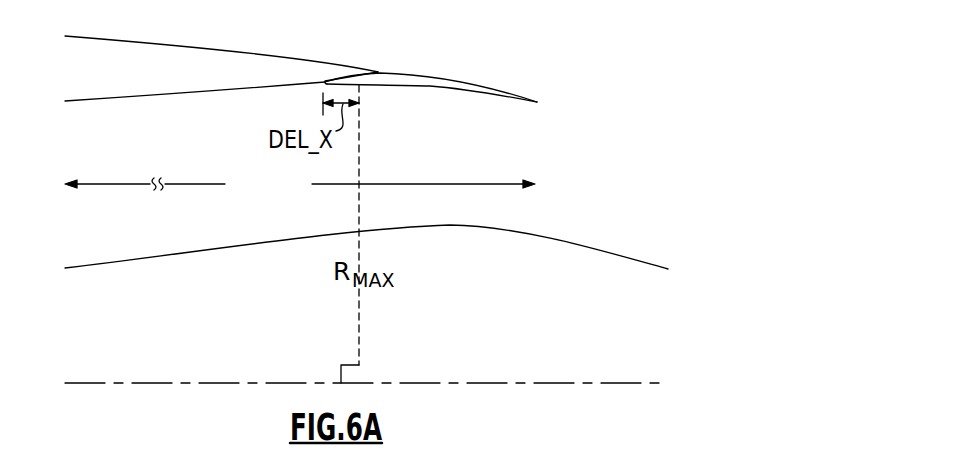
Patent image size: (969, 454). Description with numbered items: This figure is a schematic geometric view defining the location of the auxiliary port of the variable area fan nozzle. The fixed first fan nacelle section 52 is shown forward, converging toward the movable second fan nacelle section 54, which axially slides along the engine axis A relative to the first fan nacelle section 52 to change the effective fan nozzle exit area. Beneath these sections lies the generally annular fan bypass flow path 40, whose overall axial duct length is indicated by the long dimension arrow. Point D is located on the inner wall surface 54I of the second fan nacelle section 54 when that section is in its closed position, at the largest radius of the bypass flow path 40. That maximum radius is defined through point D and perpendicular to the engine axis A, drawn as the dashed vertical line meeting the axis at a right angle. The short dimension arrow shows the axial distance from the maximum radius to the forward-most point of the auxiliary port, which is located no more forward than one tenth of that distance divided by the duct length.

The first fan nacelle section 52 is at (188, 80).
The bypass flow path 40 is at (213, 158).
The second fan nacelle section 54 is at (488, 83).
The inner wall surface 54I is at (420, 86).
The point D is at (360, 85).
The engine axis A is at (533, 383).